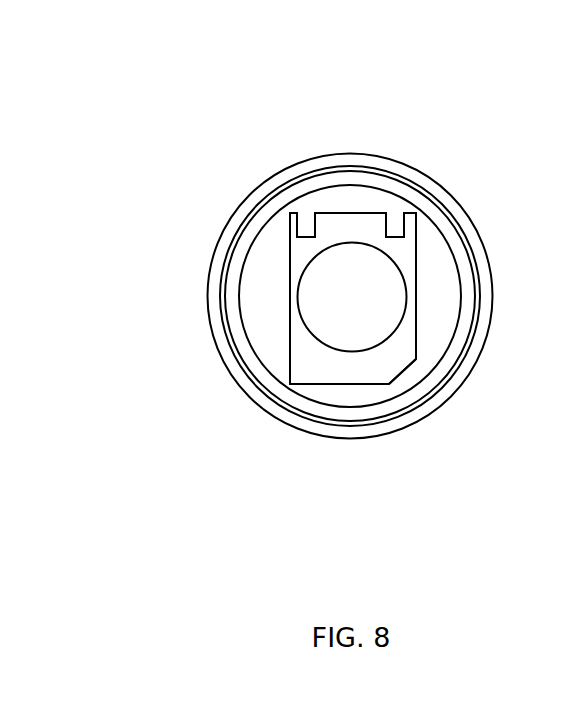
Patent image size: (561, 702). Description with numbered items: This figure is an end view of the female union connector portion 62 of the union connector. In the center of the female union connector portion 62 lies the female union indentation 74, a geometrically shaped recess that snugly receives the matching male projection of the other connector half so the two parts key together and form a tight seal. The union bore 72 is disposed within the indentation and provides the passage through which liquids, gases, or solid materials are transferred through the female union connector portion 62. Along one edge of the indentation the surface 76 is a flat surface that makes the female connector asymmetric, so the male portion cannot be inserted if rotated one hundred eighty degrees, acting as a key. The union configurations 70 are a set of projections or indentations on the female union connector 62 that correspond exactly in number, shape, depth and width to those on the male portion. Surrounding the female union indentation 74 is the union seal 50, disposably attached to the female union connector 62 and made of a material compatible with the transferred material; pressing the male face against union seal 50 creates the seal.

The union seal 50 is at (452, 358).
The female union connector portion 62 is at (200, 143).
The union configurations 70 is at (307, 222).
The union bore 72 is at (330, 297).
The female union indentation 74 is at (388, 376).
The surface 76 is at (402, 372).